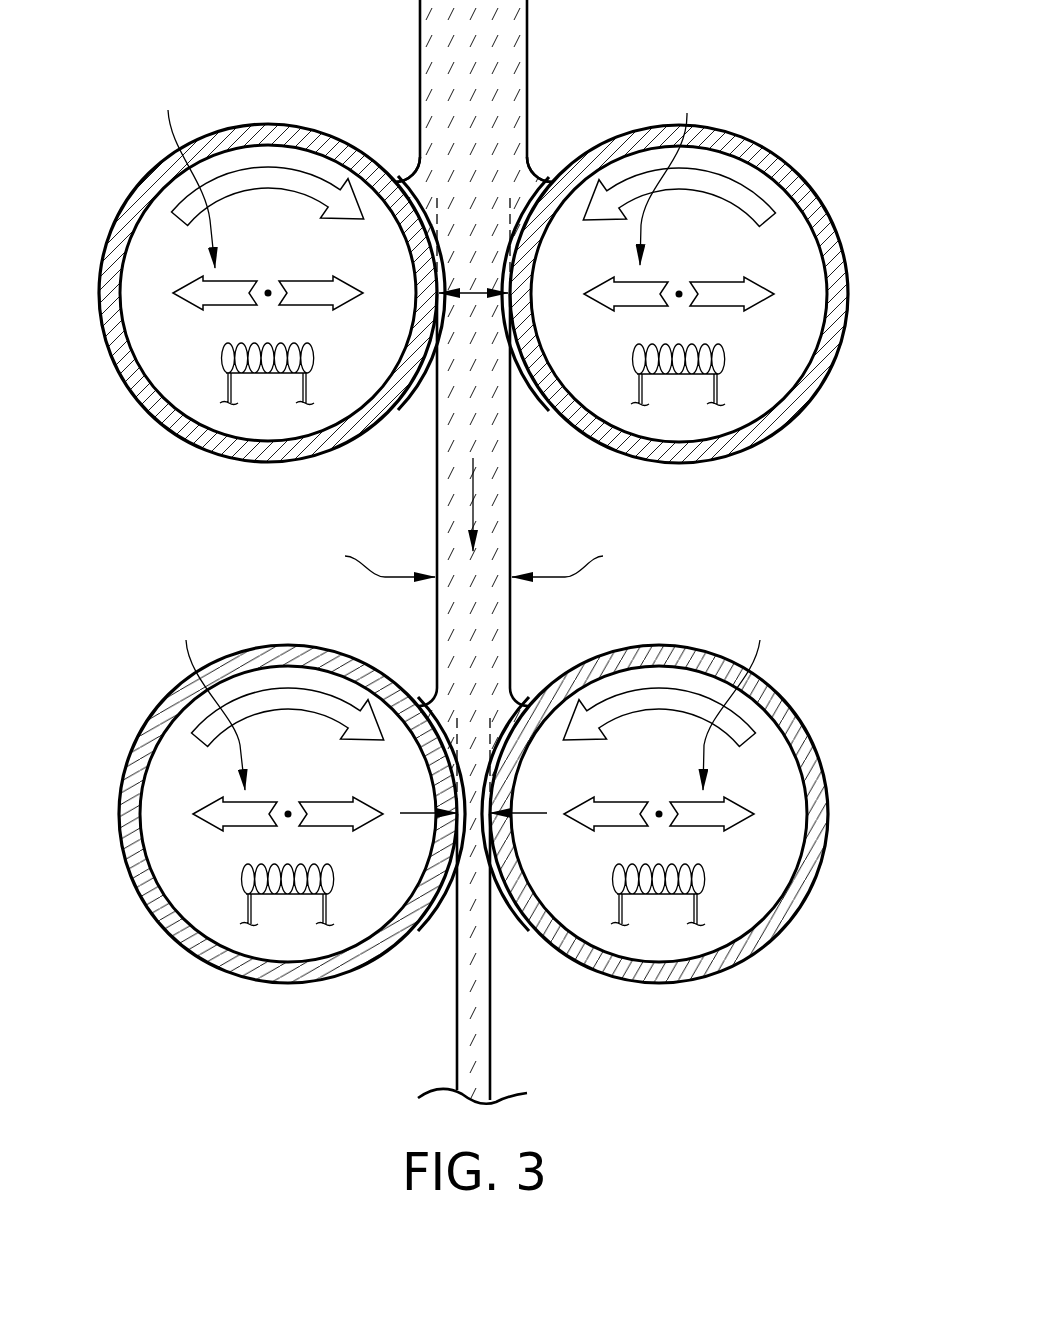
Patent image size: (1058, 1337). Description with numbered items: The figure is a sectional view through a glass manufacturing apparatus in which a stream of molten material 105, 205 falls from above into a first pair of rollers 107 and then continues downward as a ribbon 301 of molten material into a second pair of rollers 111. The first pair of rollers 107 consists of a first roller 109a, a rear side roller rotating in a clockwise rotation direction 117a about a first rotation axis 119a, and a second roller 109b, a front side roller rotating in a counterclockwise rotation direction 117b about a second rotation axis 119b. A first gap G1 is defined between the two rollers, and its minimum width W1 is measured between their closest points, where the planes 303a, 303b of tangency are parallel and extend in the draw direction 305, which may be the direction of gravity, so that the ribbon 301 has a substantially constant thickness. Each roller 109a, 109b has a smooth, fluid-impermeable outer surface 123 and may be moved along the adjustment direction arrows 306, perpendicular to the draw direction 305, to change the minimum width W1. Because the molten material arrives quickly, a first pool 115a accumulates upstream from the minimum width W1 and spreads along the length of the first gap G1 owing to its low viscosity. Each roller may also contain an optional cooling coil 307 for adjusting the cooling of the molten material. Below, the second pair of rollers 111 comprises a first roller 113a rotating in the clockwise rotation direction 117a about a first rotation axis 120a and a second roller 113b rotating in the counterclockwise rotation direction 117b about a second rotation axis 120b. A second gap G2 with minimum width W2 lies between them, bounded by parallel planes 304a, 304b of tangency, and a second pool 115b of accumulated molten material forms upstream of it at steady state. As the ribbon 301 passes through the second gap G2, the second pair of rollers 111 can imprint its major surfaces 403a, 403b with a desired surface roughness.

The molten material 105 is at (545, 552).
The molten material 205 is at (527, 30).
The first pair of rollers 107 is at (502, 256).
The second pair of rollers 111 is at (479, 754).
The first roller 109a is at (253, 315).
The second roller 109b is at (837, 163).
The first roller 113a is at (160, 700).
The second roller 113b is at (820, 680).
The first pool 115a is at (548, 172).
The second pool 115b is at (518, 690).
The clockwise rotation direction 117a is at (310, 177).
The counterclockwise rotation direction 117b is at (720, 177).
The first rotation axis 119a is at (269, 288).
The second rotation axis 119b is at (679, 288).
The first rotation axis 120a is at (289, 809).
The second rotation axis 120b is at (659, 809).
The outer surface 123 is at (143, 418).
The ribbon of molten material 301 is at (458, 317).
The plane of tangency 303a is at (436, 220).
The plane of tangency 303b is at (512, 221).
The plane of tangency 304a is at (454, 740).
The plane of tangency 304b is at (494, 740).
The draw direction 305 is at (473, 500).
The adjustment direction arrows 306 is at (473, 436).
The cooling coil 307 is at (267, 375).
The major surface 403a is at (356, 558).
The major surface 403b is at (593, 559).
The minimum width W1 is at (473, 290).
The minimum width W2 is at (474, 819).
The first gap G1 is at (503, 368).
The second gap G2 is at (503, 898).